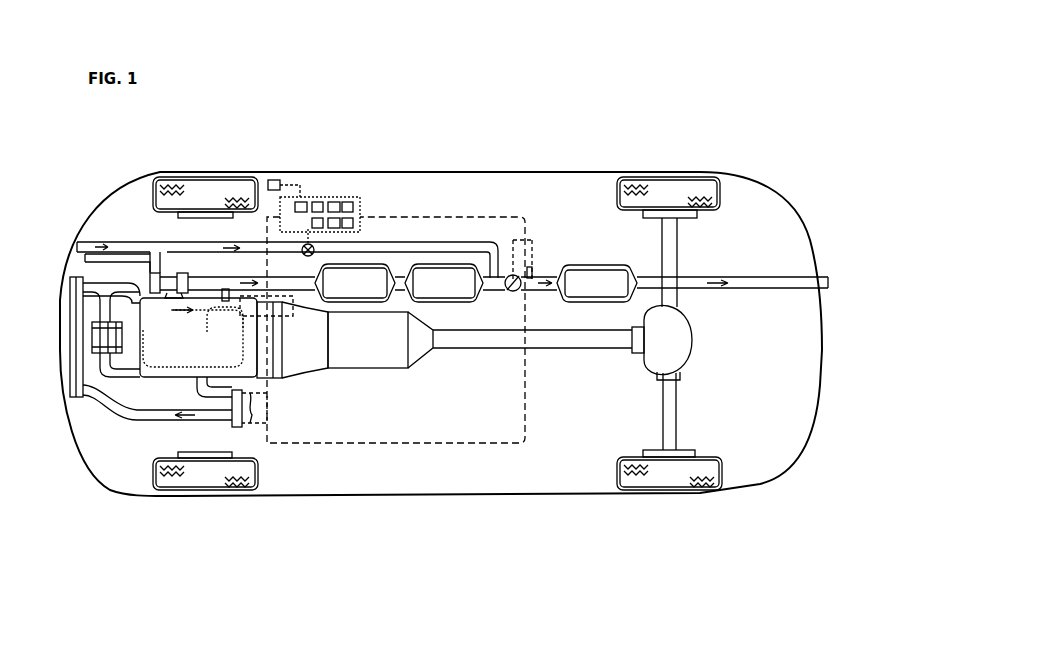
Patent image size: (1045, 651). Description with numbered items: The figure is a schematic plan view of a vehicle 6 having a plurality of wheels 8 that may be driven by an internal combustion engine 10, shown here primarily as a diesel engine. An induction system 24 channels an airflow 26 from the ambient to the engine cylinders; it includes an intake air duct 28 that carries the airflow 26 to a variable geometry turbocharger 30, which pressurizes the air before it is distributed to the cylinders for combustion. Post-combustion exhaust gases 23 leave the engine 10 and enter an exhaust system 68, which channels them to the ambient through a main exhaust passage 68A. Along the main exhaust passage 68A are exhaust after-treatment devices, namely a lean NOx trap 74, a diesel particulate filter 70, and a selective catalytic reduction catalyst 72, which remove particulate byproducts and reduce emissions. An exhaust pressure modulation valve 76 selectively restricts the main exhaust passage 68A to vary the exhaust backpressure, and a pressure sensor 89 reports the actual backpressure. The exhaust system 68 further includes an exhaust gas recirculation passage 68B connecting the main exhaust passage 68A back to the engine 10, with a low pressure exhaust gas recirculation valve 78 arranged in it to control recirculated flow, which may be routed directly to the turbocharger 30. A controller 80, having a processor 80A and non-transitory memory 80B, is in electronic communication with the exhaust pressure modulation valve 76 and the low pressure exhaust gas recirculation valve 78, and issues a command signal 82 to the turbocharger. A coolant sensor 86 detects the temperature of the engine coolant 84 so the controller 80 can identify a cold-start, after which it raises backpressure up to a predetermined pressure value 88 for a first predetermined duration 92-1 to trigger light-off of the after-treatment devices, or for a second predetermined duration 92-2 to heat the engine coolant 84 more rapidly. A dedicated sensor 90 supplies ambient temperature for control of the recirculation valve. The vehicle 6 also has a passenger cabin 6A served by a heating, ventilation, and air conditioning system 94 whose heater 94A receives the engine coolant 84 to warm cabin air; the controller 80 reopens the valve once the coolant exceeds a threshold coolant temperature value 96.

The vehicle 6 is at (450, 527).
The passenger cabin 6A is at (417, 443).
The wheels 8 is at (204, 193).
The internal combustion engine 10 is at (193, 350).
The exhaust gases 23 is at (233, 246).
The induction system 24 is at (88, 300).
The airflow 26 is at (90, 243).
The intake air duct 28 is at (117, 240).
The variable geometry turbocharger 30 is at (170, 270).
The exhaust system 68 is at (492, 294).
The main exhaust passage 68A is at (547, 292).
The exhaust gas recirculation passage 68B is at (498, 243).
The diesel particulate filter 70 is at (453, 291).
The selective catalytic reduction catalyst 72 is at (606, 291).
The lean NOx trap 74 is at (364, 291).
The exhaust pressure modulation valve 76 is at (520, 278).
The low pressure exhaust gas recirculation valve 78 is at (313, 246).
The controller 80 is at (303, 230).
The processor 80A is at (301, 200).
The non-transitory memory 80B is at (318, 200).
The command signal 82 is at (335, 200).
The engine coolant 84 is at (192, 314).
The coolant sensor 86 is at (222, 301).
The predetermined pressure value 88 is at (348, 200).
The pressure sensor 89 is at (530, 267).
The dedicated sensor 90 is at (272, 178).
The first predetermined duration 92-1 is at (340, 218).
The second predetermined duration 92-2 is at (354, 224).
The heating, ventilation, and air conditioning system 94 is at (266, 404).
The heater 94A is at (235, 427).
The threshold coolant temperature value 96 is at (316, 216).